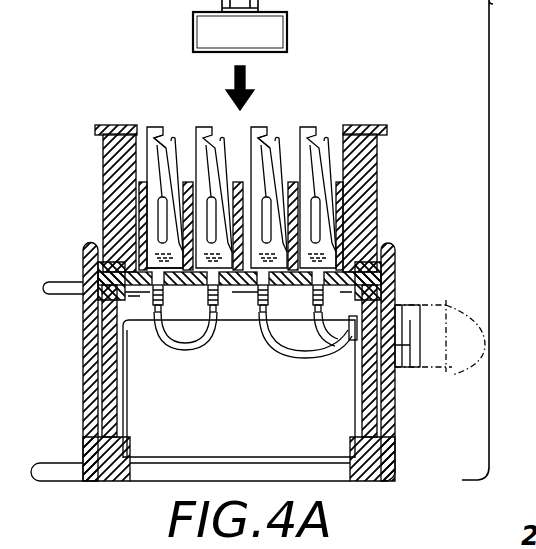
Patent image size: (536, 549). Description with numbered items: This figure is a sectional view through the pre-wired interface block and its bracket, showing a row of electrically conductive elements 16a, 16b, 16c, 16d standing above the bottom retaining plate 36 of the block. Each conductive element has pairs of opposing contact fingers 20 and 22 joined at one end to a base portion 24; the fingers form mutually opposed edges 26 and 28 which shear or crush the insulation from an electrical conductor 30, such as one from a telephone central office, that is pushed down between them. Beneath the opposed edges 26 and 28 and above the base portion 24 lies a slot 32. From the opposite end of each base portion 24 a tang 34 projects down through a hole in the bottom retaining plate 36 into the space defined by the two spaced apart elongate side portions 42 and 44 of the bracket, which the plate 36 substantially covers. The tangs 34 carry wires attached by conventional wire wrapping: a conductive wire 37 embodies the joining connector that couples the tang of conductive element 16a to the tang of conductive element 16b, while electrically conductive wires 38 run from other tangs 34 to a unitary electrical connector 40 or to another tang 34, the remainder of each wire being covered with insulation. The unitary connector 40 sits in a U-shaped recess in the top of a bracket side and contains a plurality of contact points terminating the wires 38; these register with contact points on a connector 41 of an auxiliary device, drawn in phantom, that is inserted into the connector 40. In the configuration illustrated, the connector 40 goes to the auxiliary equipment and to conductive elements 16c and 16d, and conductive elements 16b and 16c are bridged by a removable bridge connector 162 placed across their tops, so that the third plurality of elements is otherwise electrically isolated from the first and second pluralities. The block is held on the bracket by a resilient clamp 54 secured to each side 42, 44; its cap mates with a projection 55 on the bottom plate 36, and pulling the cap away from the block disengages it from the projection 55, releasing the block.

The bridge connector 162 is at (262, 48).
The conductive element 16a is at (153, 110).
The conductive element 16b is at (208, 117).
The conductive element 16c is at (270, 117).
The conductive element 16d is at (319, 115).
The contact finger 20 is at (148, 128).
The contact finger 22 is at (176, 133).
The base portion 24 is at (150, 255).
The opposed edge 26 is at (292, 136).
The opposed edge 28 is at (334, 131).
The electrical conductor 30 is at (356, 180).
The slot 32 is at (318, 222).
The tang 34 is at (155, 312).
The bottom retaining plate 36 is at (242, 300).
The conductive wire 37 is at (185, 342).
The electrically conductive wire 38 is at (332, 330).
The unitary electrical connector 40 is at (408, 362).
The connector 41 is at (436, 278).
The side portion 42 is at (115, 410).
The side portion 44 is at (356, 428).
The clamp 54 is at (394, 418).
The projection 55 is at (376, 272).